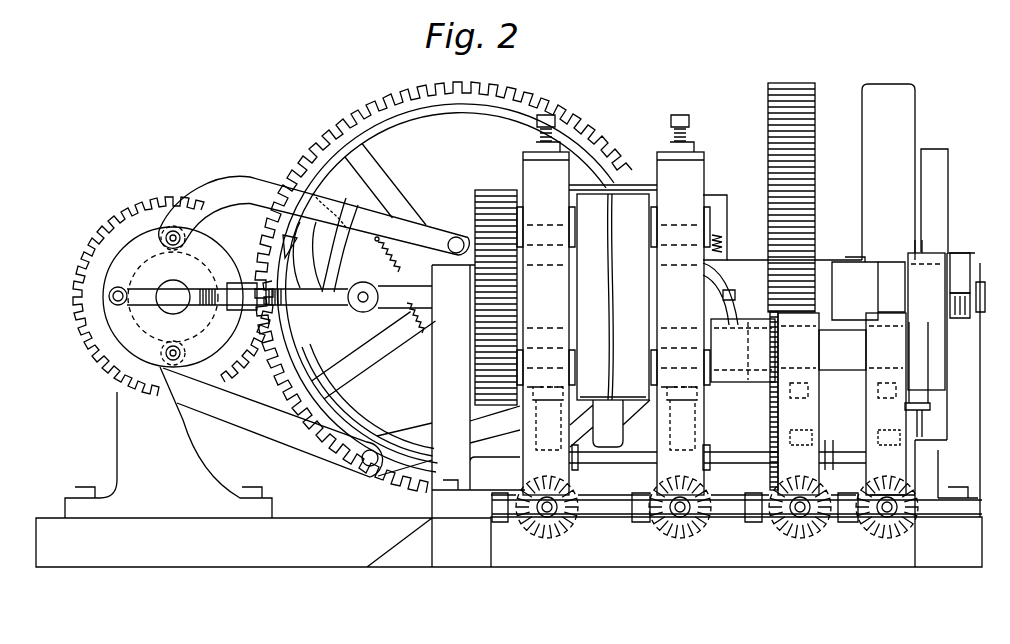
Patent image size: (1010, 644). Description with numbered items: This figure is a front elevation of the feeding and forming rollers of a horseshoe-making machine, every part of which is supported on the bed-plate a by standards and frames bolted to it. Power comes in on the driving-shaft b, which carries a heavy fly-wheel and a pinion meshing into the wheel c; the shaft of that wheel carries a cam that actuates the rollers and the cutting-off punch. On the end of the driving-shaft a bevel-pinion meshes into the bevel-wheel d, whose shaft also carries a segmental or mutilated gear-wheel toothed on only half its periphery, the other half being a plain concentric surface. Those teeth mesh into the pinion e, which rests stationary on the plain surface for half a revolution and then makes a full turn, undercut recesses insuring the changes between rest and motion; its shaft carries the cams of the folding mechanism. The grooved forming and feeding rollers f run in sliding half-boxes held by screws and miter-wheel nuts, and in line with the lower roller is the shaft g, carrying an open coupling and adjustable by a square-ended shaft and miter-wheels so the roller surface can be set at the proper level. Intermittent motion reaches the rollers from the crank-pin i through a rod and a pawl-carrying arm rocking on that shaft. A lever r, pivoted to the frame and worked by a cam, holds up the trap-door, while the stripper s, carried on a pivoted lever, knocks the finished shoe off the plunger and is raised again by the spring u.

The bed-plate a is at (509, 531).
The driving-shaft b is at (989, 296).
The wheel c is at (797, 286).
The bevel-wheel d is at (187, 296).
The pinion e is at (224, 261).
The forming and feeding roller f is at (610, 320).
The shaft g is at (842, 350).
The crank-pin i is at (961, 314).
The lever r is at (297, 422).
The stripper s is at (456, 245).
The spring u is at (399, 285).